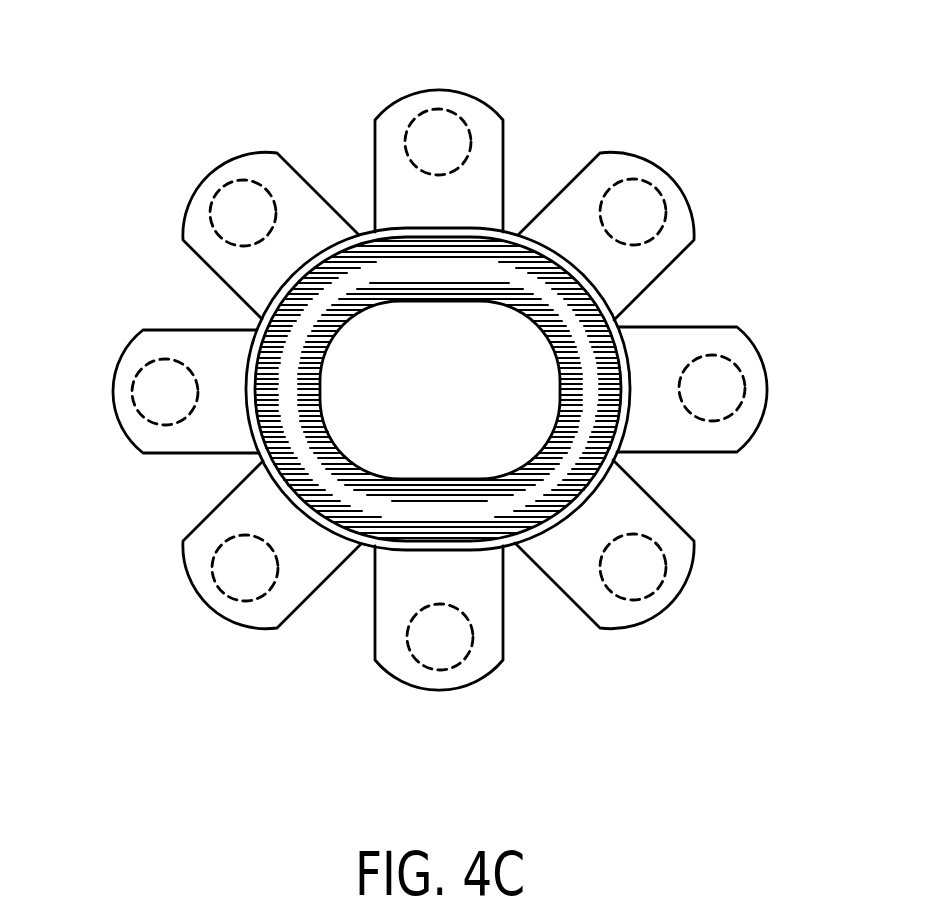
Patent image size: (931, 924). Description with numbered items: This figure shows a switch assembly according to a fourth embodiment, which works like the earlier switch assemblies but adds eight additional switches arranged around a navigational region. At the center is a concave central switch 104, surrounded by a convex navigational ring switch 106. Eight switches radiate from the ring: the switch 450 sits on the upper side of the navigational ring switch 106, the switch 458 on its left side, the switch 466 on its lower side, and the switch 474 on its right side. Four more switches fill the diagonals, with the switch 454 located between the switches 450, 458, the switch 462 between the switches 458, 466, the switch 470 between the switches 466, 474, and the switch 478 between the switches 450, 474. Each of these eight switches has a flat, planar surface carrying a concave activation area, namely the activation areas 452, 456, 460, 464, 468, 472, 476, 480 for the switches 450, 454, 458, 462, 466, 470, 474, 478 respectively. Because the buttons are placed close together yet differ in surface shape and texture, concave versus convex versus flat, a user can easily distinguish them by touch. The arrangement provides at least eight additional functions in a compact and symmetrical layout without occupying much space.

The concave central switch 104 is at (443, 417).
The convex navigational ring switch 106 is at (457, 270).
The switch 450 is at (475, 118).
The concave activation area 452 is at (430, 138).
The switch 454 is at (260, 178).
The concave activation area 456 is at (237, 213).
The switch 458 is at (147, 348).
The concave activation area 460 is at (165, 395).
The switch 462 is at (193, 562).
The concave activation area 464 is at (238, 573).
The switch 466 is at (407, 672).
The concave activation area 468 is at (445, 647).
The switch 470 is at (627, 610).
The concave activation area 472 is at (648, 570).
The switch 474 is at (727, 430).
The concave activation area 476 is at (723, 378).
The switch 478 is at (675, 232).
The concave activation area 480 is at (638, 205).